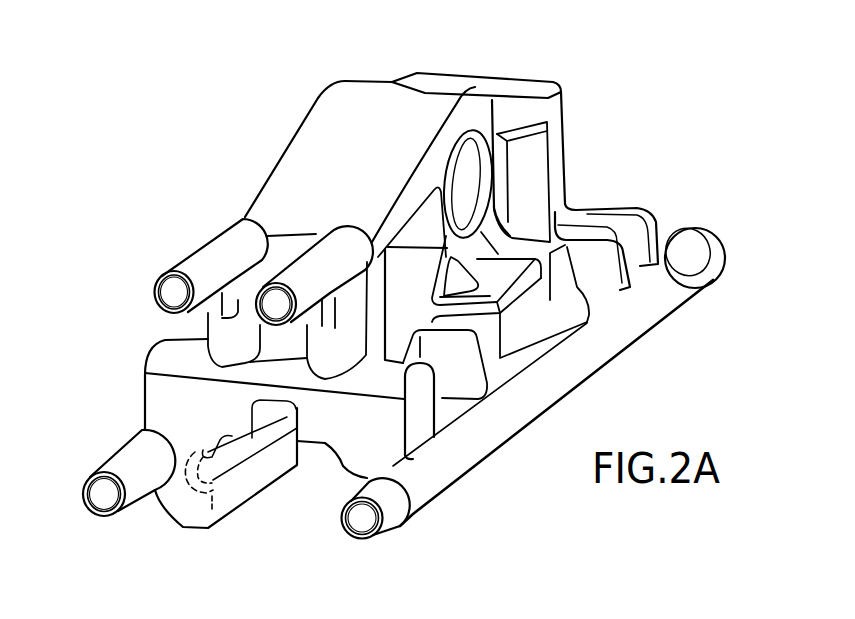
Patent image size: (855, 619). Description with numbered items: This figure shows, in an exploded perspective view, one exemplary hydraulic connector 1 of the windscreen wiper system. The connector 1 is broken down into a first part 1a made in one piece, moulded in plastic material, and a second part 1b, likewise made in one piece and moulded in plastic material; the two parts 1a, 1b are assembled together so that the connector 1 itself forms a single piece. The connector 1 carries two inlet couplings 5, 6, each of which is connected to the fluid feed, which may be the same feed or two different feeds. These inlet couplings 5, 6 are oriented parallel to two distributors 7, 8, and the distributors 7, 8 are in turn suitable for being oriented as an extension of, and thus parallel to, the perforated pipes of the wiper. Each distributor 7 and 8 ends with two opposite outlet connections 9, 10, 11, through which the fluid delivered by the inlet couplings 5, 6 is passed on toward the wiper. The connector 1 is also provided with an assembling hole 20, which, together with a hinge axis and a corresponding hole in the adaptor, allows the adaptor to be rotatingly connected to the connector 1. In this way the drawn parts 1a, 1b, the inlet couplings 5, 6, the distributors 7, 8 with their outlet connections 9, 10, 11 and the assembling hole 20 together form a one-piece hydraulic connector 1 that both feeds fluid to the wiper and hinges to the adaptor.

The hydraulic connector 1 is at (607, 64).
The first part 1a is at (140, 280).
The second part 1b is at (318, 150).
The inlet coupling 5 is at (209, 243).
The inlet coupling 6 is at (317, 243).
The distributor 7 is at (147, 518).
The distributor 8 is at (412, 540).
The outlet connection 9 is at (102, 465).
The outlet connection 10 is at (363, 494).
The outlet connection 11 is at (680, 248).
The assembling hole 20 is at (462, 152).